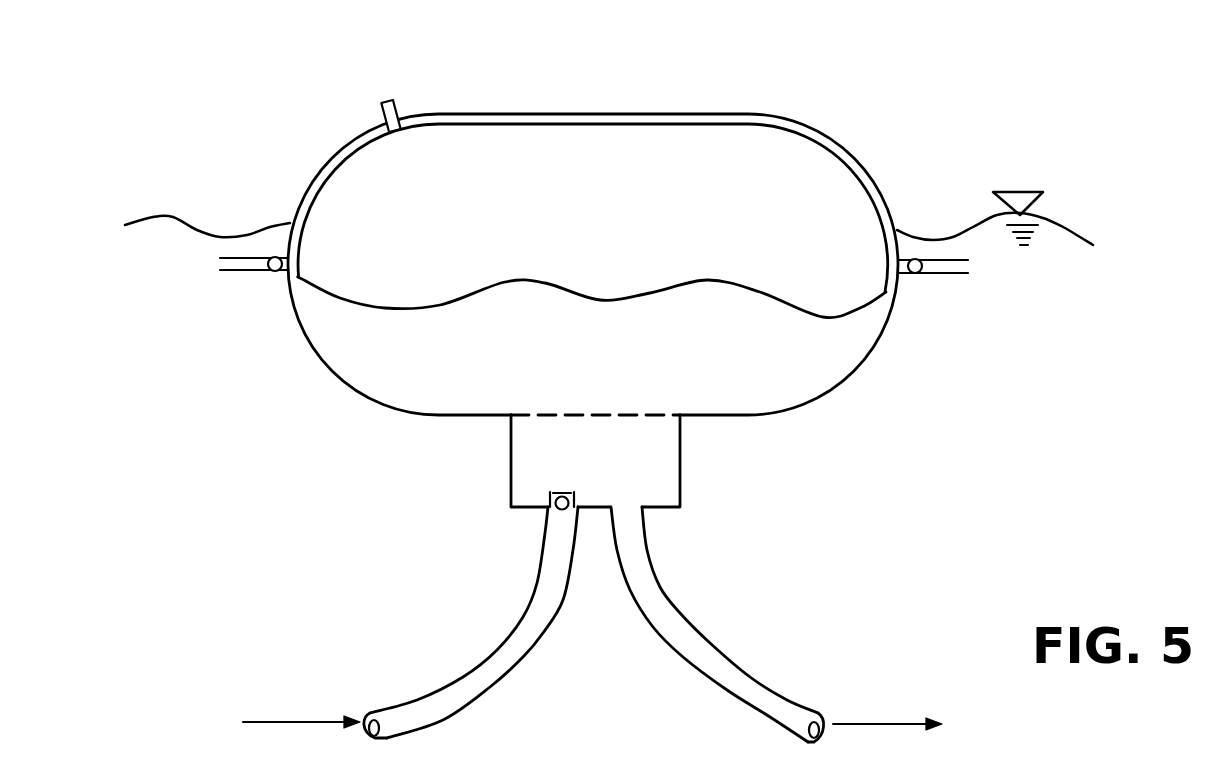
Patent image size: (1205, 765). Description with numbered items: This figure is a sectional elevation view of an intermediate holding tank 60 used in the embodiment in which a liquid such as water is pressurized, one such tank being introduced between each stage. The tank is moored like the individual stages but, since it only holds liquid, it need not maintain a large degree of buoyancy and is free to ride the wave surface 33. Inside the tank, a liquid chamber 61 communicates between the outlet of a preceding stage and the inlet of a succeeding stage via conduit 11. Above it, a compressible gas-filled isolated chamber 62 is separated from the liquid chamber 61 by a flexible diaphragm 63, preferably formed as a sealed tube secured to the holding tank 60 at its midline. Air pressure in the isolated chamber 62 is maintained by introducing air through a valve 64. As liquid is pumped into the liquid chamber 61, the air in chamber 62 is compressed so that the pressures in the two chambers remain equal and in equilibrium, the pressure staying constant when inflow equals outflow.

The conduit 11 is at (542, 628).
The wave surface 33 is at (925, 237).
The intermediate holding tank 60 is at (823, 135).
The liquid chamber 61 is at (800, 370).
The isolated chamber 62 is at (593, 175).
The flexible diaphragm 63 is at (573, 298).
The valve 64 is at (397, 107).